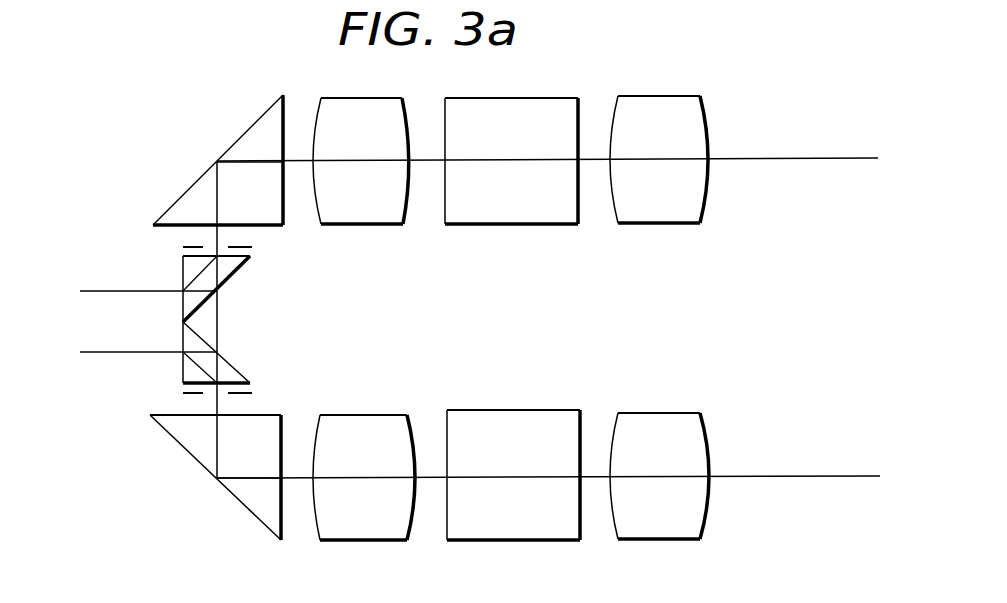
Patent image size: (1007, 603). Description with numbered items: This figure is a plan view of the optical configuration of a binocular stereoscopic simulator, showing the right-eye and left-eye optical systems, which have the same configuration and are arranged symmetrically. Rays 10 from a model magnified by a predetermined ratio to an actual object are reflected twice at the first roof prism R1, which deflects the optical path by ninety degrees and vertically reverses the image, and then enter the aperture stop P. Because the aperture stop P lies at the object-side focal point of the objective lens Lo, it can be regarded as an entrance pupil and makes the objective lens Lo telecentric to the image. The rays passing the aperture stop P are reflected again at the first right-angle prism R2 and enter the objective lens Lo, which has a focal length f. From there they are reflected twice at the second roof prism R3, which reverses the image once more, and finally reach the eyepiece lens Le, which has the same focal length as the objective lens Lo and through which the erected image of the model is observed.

The rays 10 is at (100, 292).
The aperture stop P is at (172, 247).
The first roof prism R1 is at (230, 267).
The first right-angle prism R2 is at (262, 207).
The objective lens Lo is at (375, 203).
The second roof prism R3 is at (535, 208).
The eyepiece lens Le is at (670, 212).